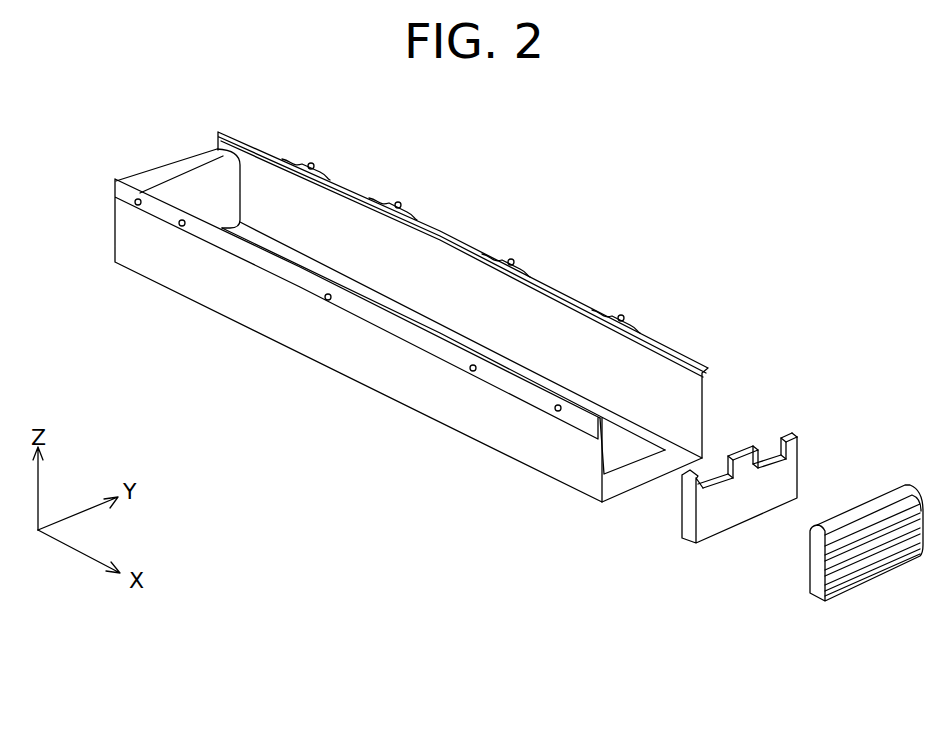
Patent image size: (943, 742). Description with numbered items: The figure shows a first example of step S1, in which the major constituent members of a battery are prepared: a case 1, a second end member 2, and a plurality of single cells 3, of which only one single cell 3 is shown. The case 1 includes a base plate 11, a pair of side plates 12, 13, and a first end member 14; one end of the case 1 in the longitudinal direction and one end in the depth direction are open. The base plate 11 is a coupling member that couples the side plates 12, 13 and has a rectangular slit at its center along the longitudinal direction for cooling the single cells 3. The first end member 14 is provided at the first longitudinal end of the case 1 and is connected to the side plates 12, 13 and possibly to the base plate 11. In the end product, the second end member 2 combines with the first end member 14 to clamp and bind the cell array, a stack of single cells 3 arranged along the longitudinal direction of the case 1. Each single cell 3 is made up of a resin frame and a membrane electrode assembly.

The case 1 is at (477, 231).
The second end member 2 is at (867, 592).
The single cell 3 is at (707, 539).
The base plate 11 is at (621, 491).
The side plate 12 is at (424, 416).
The side plate 13 is at (338, 186).
The first end member 14 is at (167, 155).
The step S1 is at (802, 105).